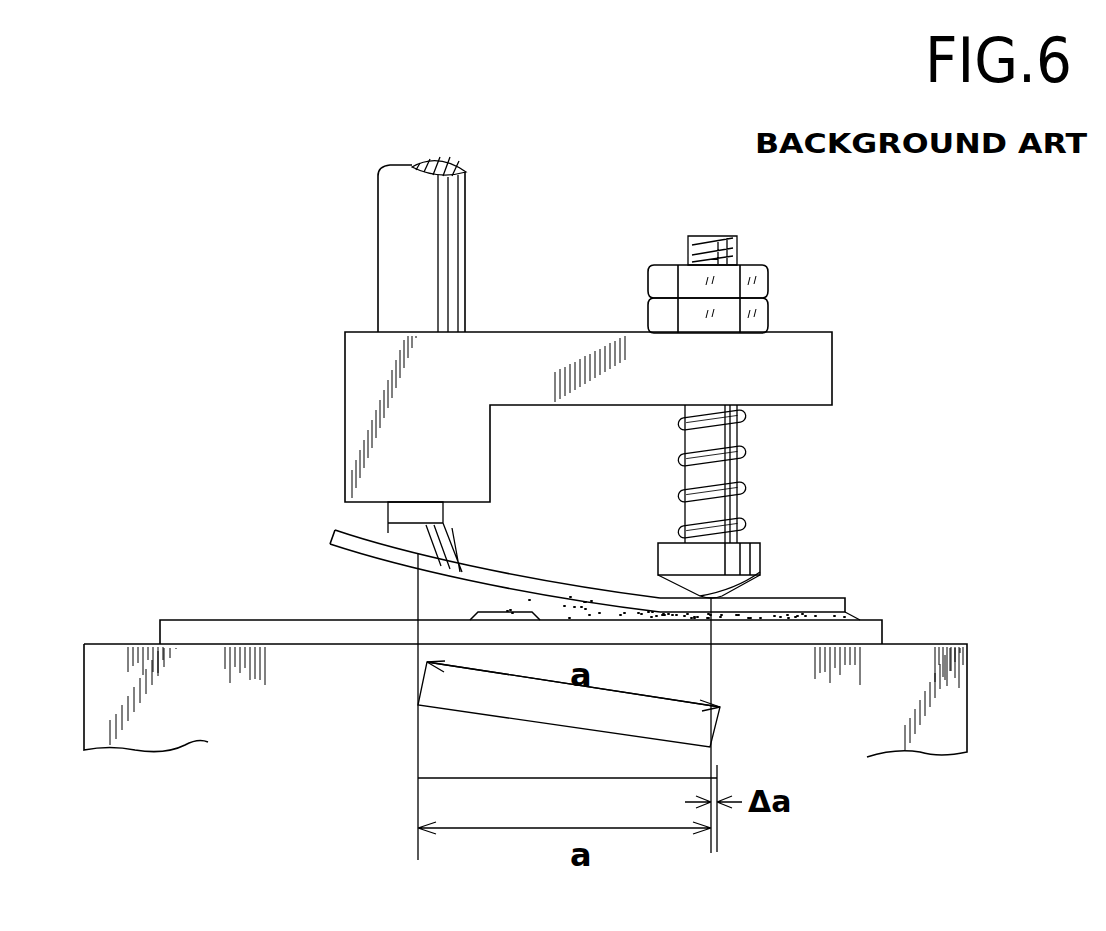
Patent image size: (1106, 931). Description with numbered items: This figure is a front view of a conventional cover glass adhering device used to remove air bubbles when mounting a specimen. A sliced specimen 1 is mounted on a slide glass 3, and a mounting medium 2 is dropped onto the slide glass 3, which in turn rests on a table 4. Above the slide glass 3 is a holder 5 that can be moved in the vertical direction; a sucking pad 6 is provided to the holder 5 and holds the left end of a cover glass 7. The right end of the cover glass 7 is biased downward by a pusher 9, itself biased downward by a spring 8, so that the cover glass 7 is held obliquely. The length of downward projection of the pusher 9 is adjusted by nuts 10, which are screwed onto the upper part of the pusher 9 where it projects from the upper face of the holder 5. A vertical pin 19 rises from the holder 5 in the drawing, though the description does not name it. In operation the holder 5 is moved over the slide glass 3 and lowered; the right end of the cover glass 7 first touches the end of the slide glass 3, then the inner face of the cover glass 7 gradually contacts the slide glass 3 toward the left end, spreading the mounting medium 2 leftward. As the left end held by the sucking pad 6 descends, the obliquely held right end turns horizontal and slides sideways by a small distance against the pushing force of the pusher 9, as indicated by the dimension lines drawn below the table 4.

The sliced specimen 1 is at (492, 615).
The mounting medium 2 is at (605, 612).
The slide glass 3 is at (192, 628).
The table 4 is at (905, 650).
The holder 5 is at (543, 342).
The sucking pad 6 is at (390, 540).
The cover glass 7 is at (560, 605).
The spring 8 is at (745, 450).
The pusher 9 is at (760, 557).
The nuts 10 is at (768, 316).
The pin 19 is at (390, 252).